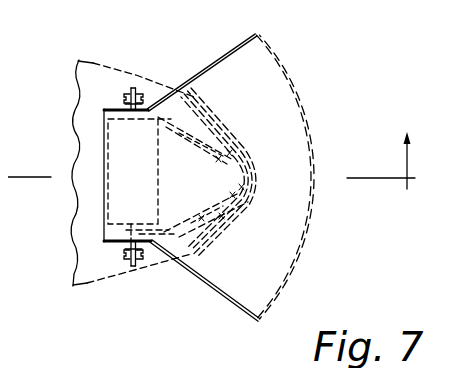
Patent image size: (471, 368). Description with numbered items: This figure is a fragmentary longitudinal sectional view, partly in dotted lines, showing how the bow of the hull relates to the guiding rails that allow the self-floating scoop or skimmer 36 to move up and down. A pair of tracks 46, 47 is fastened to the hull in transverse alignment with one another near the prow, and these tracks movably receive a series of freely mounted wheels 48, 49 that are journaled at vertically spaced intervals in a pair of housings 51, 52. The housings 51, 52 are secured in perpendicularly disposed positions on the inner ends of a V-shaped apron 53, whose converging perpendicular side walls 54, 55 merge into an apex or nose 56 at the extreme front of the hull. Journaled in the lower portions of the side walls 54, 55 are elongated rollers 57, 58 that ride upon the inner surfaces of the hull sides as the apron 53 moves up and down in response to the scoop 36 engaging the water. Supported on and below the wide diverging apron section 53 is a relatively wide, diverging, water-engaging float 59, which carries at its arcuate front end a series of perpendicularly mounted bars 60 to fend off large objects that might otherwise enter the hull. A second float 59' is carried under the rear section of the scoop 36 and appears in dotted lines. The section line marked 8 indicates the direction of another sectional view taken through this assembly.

The self-floating scoop or skimmer 36 is at (113, 107).
The track 46 is at (143, 92).
The track 47 is at (123, 253).
The wheel 48 is at (130, 89).
The wheel 49 is at (132, 266).
The housing 51 is at (138, 90).
The housing 52 is at (137, 262).
The V-shaped apron 53 is at (176, 106).
The side wall 54 is at (238, 163).
The side wall 55 is at (170, 230).
The apex or nose 56 is at (254, 173).
The elongated roller 57 is at (176, 122).
The elongated roller 58 is at (230, 223).
The float 59 is at (240, 265).
The second float 59' is at (139, 175).
The bar 60 is at (284, 80).
The section line 8- 8 is at (381, 160).